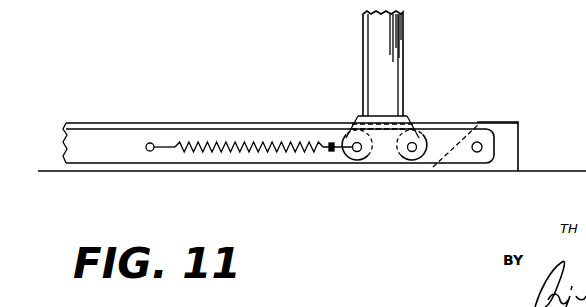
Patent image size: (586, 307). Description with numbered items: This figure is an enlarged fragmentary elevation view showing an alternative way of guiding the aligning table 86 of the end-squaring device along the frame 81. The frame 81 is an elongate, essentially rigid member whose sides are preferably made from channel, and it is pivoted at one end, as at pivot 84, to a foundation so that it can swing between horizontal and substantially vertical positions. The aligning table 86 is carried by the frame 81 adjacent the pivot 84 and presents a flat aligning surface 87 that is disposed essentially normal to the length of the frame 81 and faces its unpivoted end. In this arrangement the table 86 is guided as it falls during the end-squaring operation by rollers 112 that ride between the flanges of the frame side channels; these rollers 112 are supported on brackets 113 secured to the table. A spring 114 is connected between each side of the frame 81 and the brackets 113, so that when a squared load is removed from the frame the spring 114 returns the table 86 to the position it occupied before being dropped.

The frame 81 is at (91, 152).
The pivot 84 is at (477, 153).
The aligning table 86 is at (393, 43).
The aligning surface 87 is at (363, 40).
The rollers 112 is at (383, 183).
The brackets 113 is at (405, 121).
The spring 114 is at (199, 144).